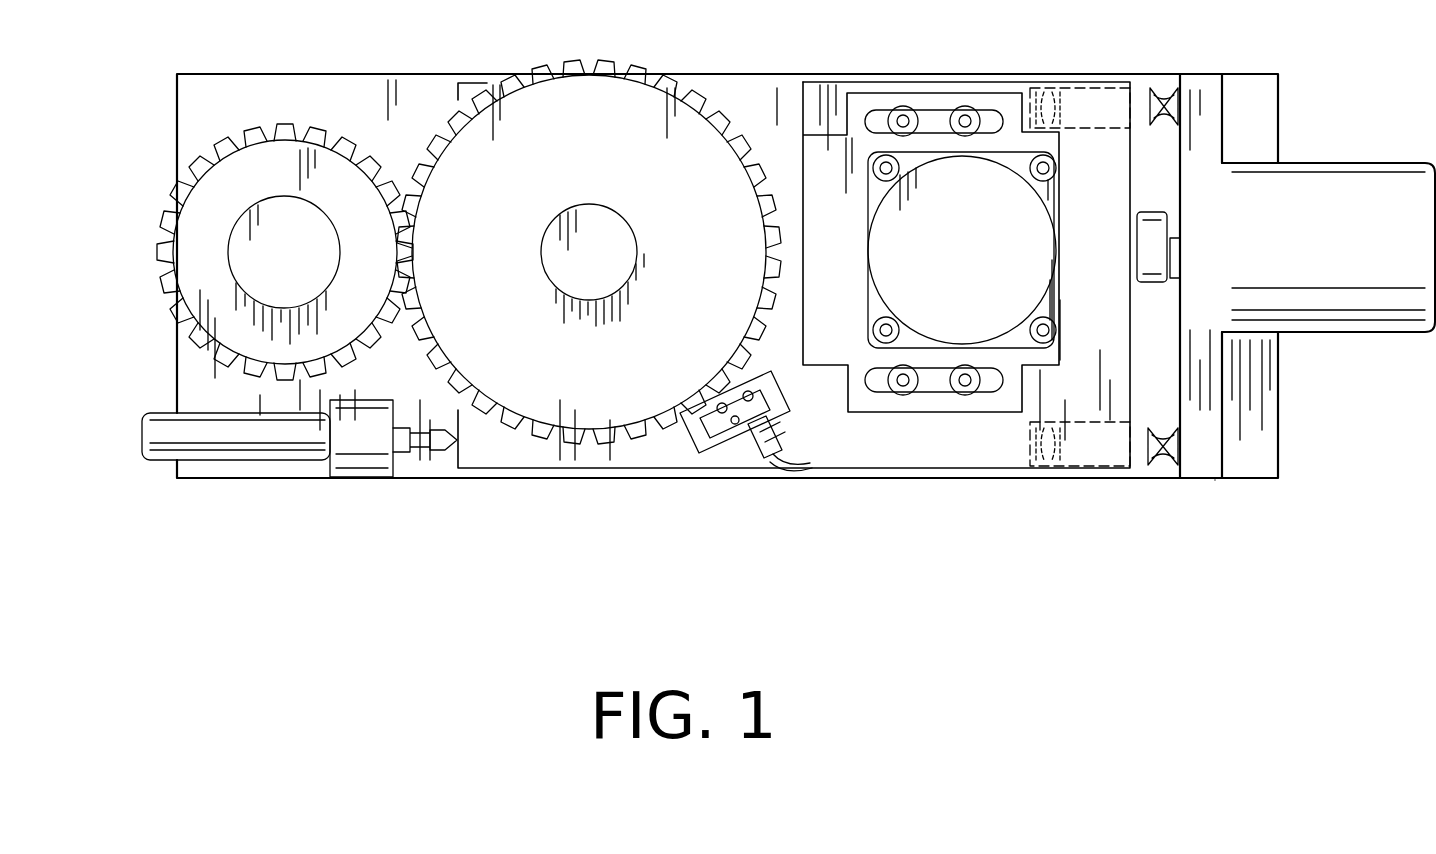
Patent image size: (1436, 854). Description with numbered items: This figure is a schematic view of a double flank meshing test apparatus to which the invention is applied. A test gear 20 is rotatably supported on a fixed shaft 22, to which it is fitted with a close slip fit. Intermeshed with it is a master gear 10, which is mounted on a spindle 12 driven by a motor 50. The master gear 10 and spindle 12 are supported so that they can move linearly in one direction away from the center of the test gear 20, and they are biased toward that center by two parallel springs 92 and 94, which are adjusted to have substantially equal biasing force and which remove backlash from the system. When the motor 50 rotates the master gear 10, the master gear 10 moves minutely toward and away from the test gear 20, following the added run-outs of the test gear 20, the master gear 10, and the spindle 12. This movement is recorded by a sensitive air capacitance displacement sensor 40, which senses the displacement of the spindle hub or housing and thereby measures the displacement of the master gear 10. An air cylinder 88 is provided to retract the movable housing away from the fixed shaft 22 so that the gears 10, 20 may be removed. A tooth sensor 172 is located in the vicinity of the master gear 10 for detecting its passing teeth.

The master gear 10 is at (575, 60).
The spindle 12 is at (552, 238).
The test gear 20 is at (262, 130).
The fixed shaft 22 is at (276, 212).
The displacement sensor 40 is at (167, 437).
The motor 50 is at (895, 276).
The air cylinder 88 is at (1358, 165).
The spring 92 is at (1170, 479).
The spring 94 is at (1170, 86).
The tooth sensor 172 is at (763, 455).